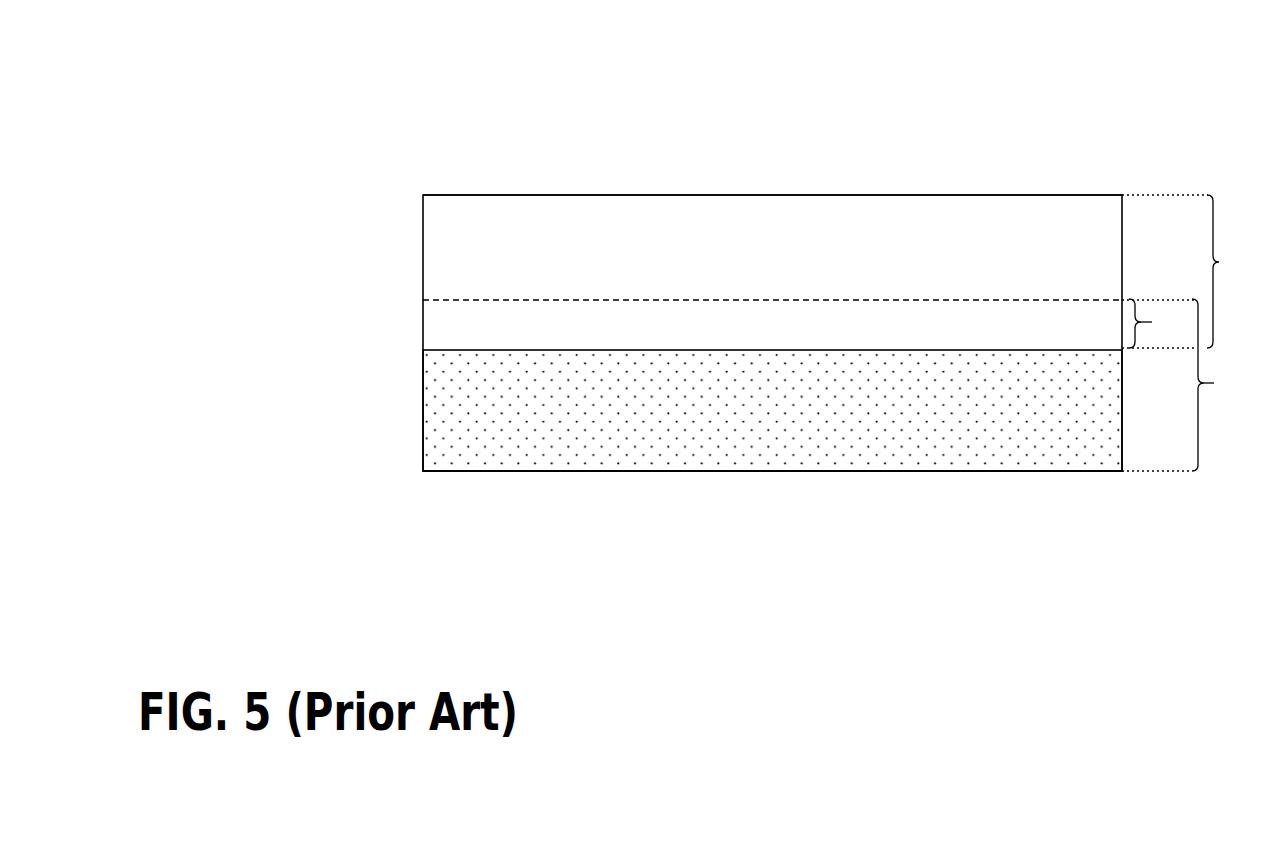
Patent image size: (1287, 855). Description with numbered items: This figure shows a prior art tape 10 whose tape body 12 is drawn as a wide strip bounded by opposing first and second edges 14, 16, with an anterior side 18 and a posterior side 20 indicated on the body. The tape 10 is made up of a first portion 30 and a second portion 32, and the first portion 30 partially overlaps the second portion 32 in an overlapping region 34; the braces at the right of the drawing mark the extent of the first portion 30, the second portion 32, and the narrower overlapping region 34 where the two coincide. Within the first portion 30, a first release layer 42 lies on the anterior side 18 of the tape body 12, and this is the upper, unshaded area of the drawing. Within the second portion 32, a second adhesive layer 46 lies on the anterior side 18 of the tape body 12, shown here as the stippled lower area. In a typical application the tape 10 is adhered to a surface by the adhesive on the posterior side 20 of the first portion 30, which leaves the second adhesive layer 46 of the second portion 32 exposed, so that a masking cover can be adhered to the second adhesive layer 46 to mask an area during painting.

The tape 10 is at (391, 150).
The tape body 12 is at (408, 318).
The first edge 14 is at (831, 195).
The second edge 16 is at (843, 472).
The anterior side 18 is at (518, 384).
The posterior side 20 is at (496, 480).
The first portion 30 is at (1196, 271).
The second portion 32 is at (1188, 385).
The overlapping region 34 is at (1158, 323).
The first release layer 42 is at (933, 258).
The second adhesive layer 46 is at (948, 443).